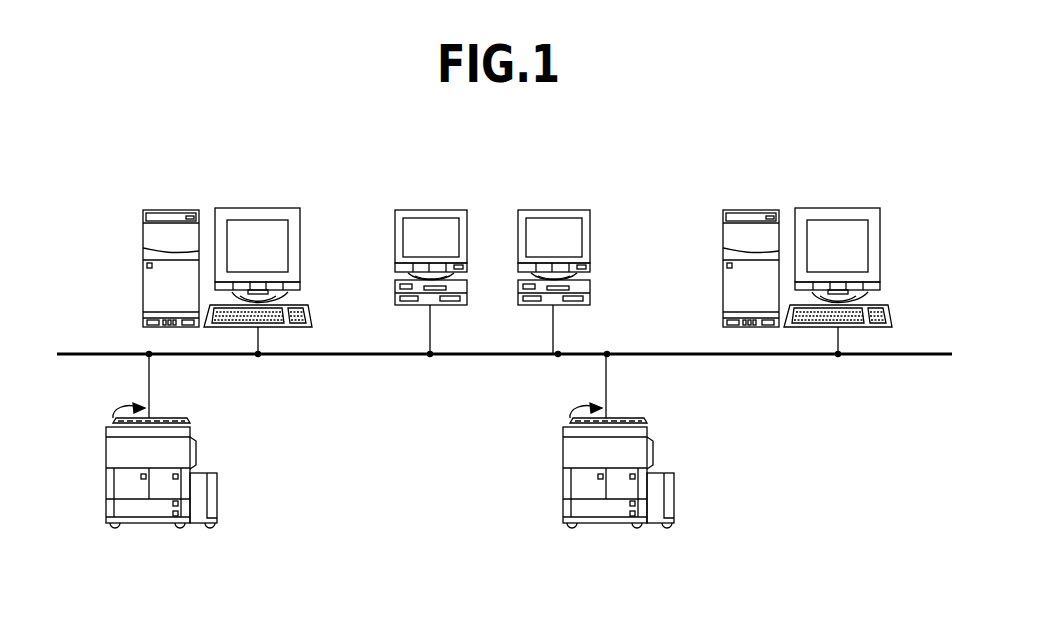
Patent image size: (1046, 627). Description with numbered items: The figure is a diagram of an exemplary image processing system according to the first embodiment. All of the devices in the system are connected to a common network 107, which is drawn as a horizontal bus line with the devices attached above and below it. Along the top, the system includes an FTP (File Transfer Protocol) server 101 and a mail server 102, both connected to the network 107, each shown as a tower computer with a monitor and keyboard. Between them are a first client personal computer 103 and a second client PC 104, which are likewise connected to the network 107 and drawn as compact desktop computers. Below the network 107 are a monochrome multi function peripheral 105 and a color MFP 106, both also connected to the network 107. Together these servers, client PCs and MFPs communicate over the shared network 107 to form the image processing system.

The FTP server 101 is at (253, 207).
The mail server 102 is at (833, 207).
The first client personal computer 103 is at (432, 217).
The second client PC 104 is at (555, 217).
The monochrome multi function peripheral 105 is at (148, 528).
The color MFP 106 is at (605, 528).
The network 107 is at (84, 353).